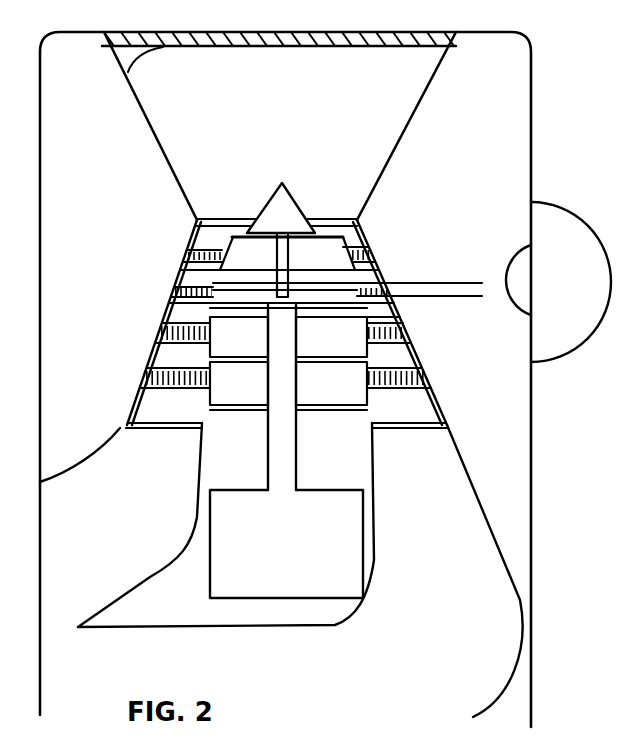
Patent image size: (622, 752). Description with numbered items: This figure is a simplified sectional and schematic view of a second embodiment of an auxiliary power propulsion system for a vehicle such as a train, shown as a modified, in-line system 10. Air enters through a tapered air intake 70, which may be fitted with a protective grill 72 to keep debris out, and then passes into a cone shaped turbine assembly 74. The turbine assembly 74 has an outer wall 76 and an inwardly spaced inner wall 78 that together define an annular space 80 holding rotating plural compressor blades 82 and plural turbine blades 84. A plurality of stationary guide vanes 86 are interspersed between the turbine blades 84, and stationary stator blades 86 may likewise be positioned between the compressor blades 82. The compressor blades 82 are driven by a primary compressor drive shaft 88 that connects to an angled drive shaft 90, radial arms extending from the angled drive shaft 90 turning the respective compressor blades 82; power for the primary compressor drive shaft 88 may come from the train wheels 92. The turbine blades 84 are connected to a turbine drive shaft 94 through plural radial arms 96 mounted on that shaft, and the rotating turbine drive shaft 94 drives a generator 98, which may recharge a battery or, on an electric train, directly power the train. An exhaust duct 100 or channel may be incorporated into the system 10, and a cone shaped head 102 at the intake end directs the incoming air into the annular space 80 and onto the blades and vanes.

The in-line system 10 is at (518, 24).
The tapered air intake 70 is at (188, 32).
The protective grill 72 is at (280, 27).
The cone shaped turbine assembly 74 is at (374, 240).
The outer wall 76 is at (463, 407).
The inner wall 78 is at (461, 453).
The annular space 80 is at (142, 483).
The compressor blades 82 is at (340, 223).
The turbine blades 84 is at (405, 313).
The stationary guide vanes 86 is at (152, 332).
The primary compressor drive shaft 88 is at (462, 288).
The angled drive shaft 90 is at (273, 265).
The train wheels 92 is at (577, 208).
The turbine drive shaft 94 is at (298, 447).
The radial arms 96 is at (320, 400).
The generator 98 is at (266, 600).
The exhaust duct 100 is at (421, 623).
The cone shaped head 102 is at (283, 183).